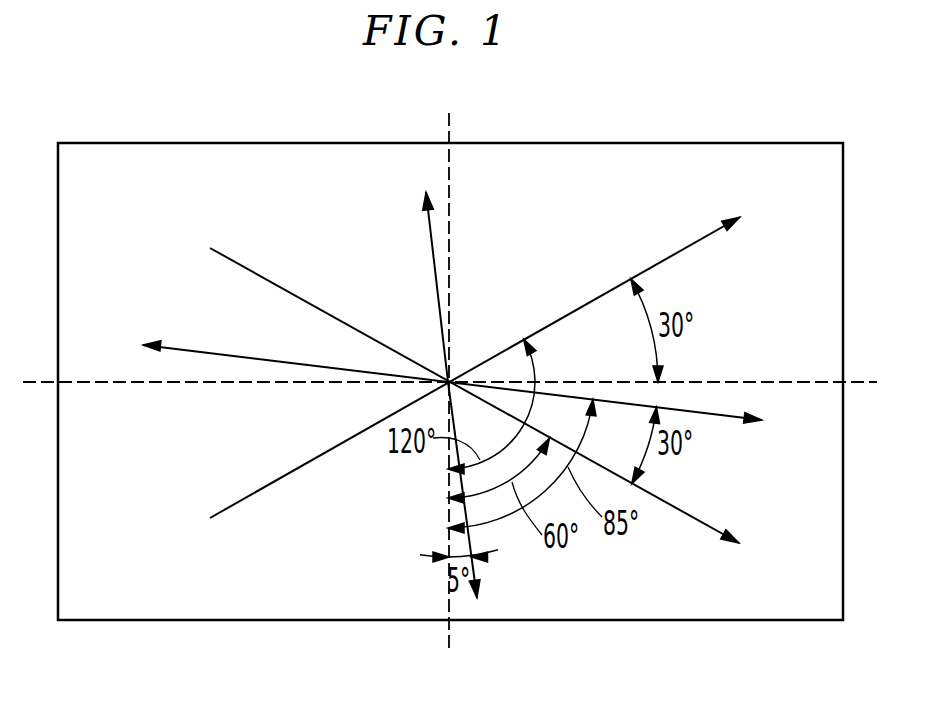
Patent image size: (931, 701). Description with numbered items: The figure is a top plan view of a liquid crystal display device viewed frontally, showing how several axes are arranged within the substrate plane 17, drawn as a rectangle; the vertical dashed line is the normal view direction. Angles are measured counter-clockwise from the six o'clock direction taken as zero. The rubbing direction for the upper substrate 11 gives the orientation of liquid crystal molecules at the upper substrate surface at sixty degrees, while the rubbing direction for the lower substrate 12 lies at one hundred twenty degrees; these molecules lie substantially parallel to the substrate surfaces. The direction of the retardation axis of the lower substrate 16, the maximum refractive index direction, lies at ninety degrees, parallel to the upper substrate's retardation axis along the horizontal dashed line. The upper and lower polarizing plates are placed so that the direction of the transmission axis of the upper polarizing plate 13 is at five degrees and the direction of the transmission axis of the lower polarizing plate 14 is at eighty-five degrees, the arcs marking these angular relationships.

The rubbing direction for upper substrate 11 is at (710, 527).
The rubbing direction for lower substrate 12 is at (684, 249).
The direction of transmission axis of upper polarizing plate 13 is at (432, 243).
The direction of transmission axis of lower polarizing plate 14 is at (730, 417).
The direction of retardation axis of lower substrate 16 is at (450, 380).
The substrate plane 17 is at (639, 602).